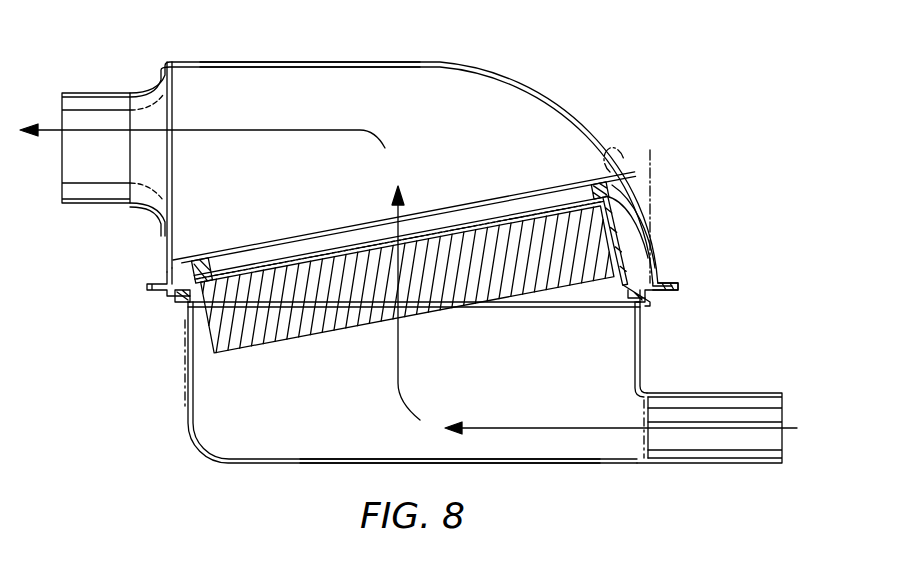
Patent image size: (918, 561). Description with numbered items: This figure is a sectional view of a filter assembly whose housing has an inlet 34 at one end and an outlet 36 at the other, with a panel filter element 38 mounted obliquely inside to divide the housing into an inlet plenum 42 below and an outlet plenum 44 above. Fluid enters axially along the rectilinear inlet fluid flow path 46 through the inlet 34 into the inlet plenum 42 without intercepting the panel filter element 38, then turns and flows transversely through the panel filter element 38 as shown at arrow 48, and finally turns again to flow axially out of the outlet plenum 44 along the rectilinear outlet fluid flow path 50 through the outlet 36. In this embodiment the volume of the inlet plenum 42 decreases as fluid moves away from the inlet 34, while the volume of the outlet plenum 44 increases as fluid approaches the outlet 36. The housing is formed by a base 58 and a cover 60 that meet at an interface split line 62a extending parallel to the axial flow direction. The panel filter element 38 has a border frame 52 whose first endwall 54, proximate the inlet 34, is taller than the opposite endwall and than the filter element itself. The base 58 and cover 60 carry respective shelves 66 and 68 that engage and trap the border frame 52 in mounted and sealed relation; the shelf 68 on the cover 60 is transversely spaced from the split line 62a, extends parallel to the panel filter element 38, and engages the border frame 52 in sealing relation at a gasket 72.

The inlet 34 is at (782, 408).
The outlet 36 is at (44, 108).
The panel filter element 38 is at (305, 352).
The inlet plenum 42 is at (257, 445).
The outlet plenum 44 is at (518, 127).
The rectilinear inlet fluid flow path 46 is at (566, 428).
The arrow showing flow through panel filter element 48 is at (392, 203).
The rectilinear outlet fluid flow path 50 is at (43, 135).
The border frame 52 is at (624, 217).
The first endwall 54 is at (624, 246).
The base 58 is at (530, 467).
The cover 60 is at (258, 62).
The interface split line 62a is at (680, 290).
The shelves of base 66 is at (648, 303).
The shelf of cover 68 is at (612, 155).
The gasket 72 is at (606, 190).